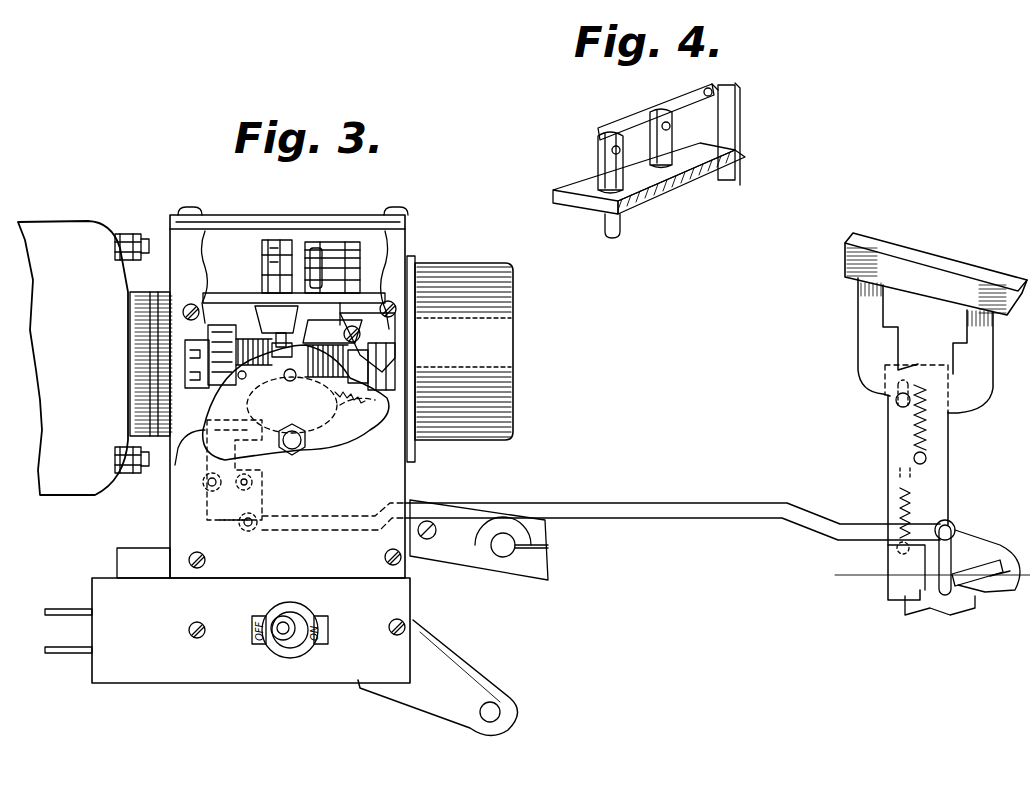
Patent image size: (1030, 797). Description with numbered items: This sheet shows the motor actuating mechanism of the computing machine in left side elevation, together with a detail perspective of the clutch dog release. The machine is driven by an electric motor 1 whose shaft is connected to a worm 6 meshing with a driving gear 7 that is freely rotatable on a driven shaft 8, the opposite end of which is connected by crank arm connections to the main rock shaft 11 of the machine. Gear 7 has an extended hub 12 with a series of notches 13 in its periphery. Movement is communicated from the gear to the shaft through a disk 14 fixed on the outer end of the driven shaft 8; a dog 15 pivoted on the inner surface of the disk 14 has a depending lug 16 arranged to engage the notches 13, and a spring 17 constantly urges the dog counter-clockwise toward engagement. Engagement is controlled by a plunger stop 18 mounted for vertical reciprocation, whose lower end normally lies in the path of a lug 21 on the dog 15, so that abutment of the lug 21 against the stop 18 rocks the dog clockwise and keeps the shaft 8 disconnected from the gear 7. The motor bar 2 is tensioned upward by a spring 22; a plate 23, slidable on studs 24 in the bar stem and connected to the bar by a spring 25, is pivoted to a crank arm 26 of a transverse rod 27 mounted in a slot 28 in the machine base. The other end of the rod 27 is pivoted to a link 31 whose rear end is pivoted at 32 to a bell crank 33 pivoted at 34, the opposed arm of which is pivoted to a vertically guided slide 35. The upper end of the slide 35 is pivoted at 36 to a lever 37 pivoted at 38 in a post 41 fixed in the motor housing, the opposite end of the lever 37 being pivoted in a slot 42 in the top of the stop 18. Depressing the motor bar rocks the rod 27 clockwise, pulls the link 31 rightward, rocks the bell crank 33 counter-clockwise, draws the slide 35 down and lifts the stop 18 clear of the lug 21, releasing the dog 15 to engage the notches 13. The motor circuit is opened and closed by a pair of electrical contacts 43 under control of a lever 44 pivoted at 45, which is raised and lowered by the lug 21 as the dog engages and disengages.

In FIG. 3, the electric motor 1 is at (45, 225).
In FIG. 3, the motor bar 2 is at (946, 262).
In FIG. 3, the worm 6 is at (252, 342).
In FIG. 3, the driving gear 7 is at (352, 402).
In FIG. 3, the driven shaft 8 is at (294, 446).
In FIG. 3, the main rock shaft 11 is at (503, 555).
In FIG. 3, the extended hub 12 is at (325, 450).
In FIG. 3, the notches 13 is at (258, 412).
In FIG. 3, the disk 14 is at (195, 438).
In FIG. 3, the dog 15 is at (210, 398).
In FIG. 3, the depending lug 16 is at (222, 422).
In FIG. 3, the spring 17 is at (245, 455).
In FIG. 3, the plunger stop 18 is at (279, 330).
In FIG. 4, the plunger stop 18 is at (605, 224).
In FIG. 3, the lug 21 is at (302, 356).
In FIG. 3, the spring 22 is at (930, 430).
In FIG. 3, the plate 23 is at (949, 458).
In FIG. 3, the studs 24 is at (898, 408).
In FIG. 3, the spring 25 is at (896, 510).
In FIG. 3, the crank arm 26 is at (978, 590).
In FIG. 3, the rod 27 is at (945, 598).
In FIG. 3, the slot 28 is at (935, 580).
In FIG. 3, the link 31 is at (654, 506).
In FIG. 3, the pivot 32 is at (252, 532).
In FIG. 3, the bell crank 33 is at (240, 522).
In FIG. 3, the pivot 34 is at (253, 484).
In FIG. 3, the slide 35 is at (205, 478).
In FIG. 4, the slide 35 is at (736, 126).
In FIG. 4, the pivot 36 is at (712, 86).
In FIG. 4, the lever 37 is at (628, 124).
In FIG. 4, the pivot 38 is at (672, 126).
In FIG. 4, the post 41 is at (685, 168).
In FIG. 4, the slot 42 is at (598, 160).
In FIG. 3, the electrical contacts 43 is at (345, 262).
In FIG. 3, the lever 44 is at (400, 265).
In FIG. 3, the pivot 45 is at (398, 350).